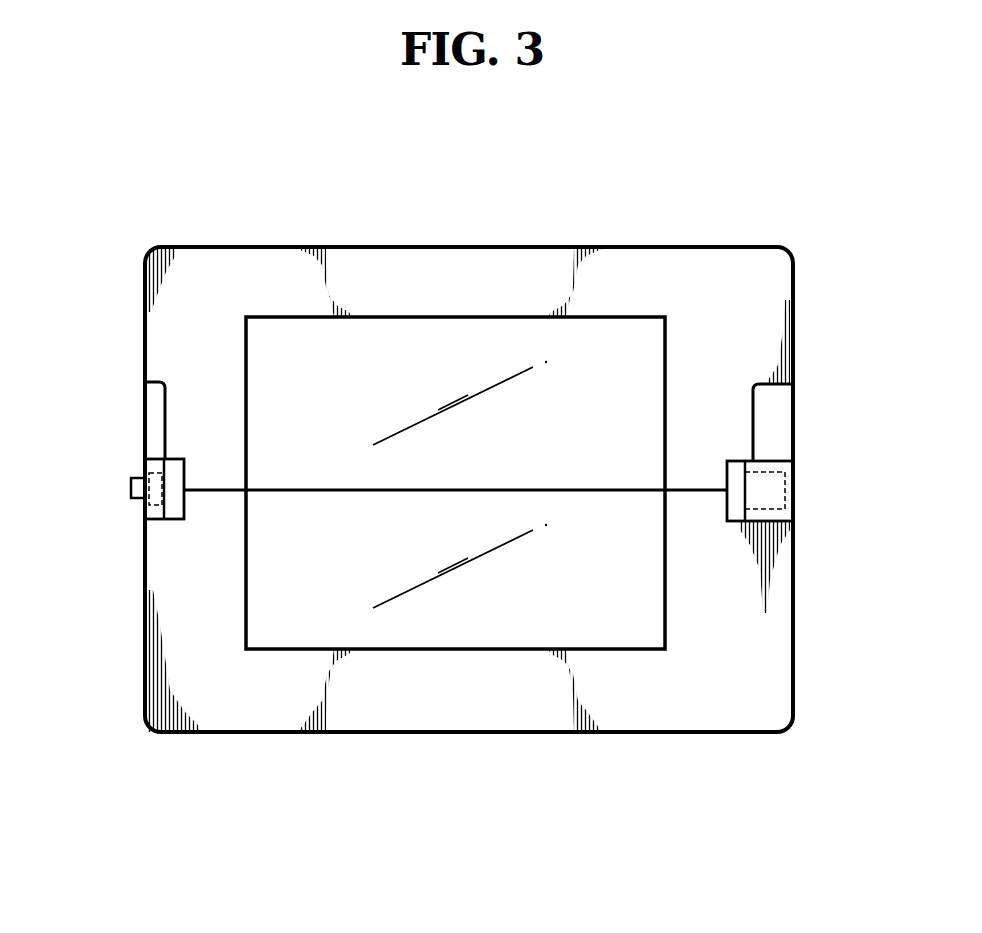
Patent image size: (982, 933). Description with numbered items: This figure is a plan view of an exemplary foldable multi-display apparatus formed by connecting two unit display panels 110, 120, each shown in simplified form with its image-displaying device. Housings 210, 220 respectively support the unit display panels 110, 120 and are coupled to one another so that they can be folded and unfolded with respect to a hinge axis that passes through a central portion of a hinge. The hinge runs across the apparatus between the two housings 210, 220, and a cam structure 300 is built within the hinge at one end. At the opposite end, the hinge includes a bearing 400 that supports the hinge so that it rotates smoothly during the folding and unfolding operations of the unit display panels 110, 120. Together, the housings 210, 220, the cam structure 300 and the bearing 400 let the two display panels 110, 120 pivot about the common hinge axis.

The unit display panel 110 is at (625, 443).
The unit display panel 120 is at (625, 613).
The housing 210 is at (208, 258).
The housing 220 is at (238, 715).
The cam structure 300 is at (793, 473).
The bearing 400 is at (147, 505).